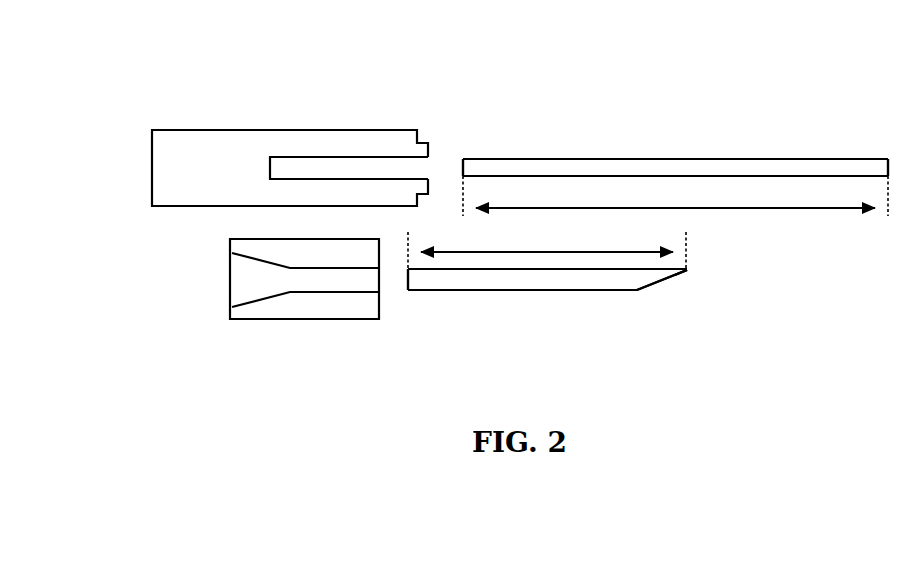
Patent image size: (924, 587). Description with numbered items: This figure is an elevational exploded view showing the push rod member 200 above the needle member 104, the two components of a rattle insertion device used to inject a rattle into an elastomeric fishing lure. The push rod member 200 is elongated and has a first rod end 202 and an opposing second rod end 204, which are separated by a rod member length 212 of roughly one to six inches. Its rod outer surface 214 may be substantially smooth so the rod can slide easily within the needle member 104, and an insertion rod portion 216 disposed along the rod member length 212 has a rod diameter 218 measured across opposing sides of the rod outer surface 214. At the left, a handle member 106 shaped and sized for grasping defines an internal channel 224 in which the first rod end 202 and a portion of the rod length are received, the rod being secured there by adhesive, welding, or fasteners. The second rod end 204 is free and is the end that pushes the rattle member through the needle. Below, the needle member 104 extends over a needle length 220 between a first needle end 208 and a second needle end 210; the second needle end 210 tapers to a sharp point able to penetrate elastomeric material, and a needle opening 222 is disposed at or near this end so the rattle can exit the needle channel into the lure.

The handle member 106 is at (232, 140).
The internal channel 224 is at (357, 151).
The push rod member 200 is at (512, 165).
The first rod end 202 is at (457, 147).
The second rod end 204 is at (883, 147).
The rod outer surface 214 is at (633, 151).
The insertion rod portion 216 is at (694, 151).
The rod diameter 218 is at (802, 200).
The rod member length 212 is at (795, 209).
The needle member 104 is at (508, 278).
The needle length 220 is at (547, 252).
The first needle end 208 is at (404, 303).
The needle opening 222 is at (637, 294).
The second needle end 210 is at (667, 292).